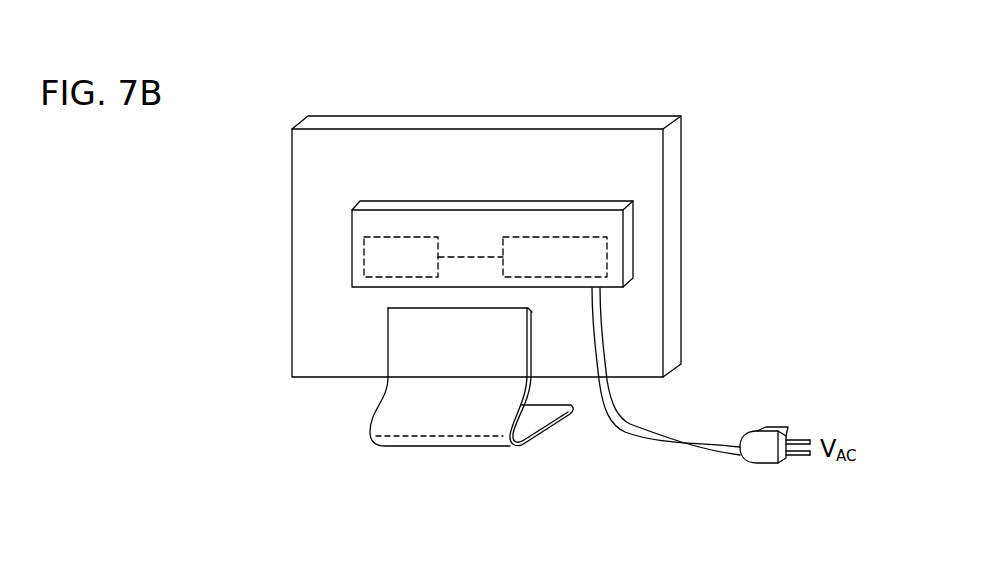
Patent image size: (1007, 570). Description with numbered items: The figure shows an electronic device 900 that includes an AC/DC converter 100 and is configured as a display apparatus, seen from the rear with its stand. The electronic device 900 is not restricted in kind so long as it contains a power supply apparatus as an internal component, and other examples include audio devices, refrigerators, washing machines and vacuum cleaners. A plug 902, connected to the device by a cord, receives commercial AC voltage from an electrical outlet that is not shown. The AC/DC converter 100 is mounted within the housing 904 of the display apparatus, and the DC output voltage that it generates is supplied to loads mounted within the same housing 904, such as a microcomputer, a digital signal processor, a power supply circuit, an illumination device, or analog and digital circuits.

The electronic device 900 is at (706, 139).
The housing 904 is at (548, 152).
The AC/DC converter 100 is at (592, 259).
The plug 902 is at (758, 464).